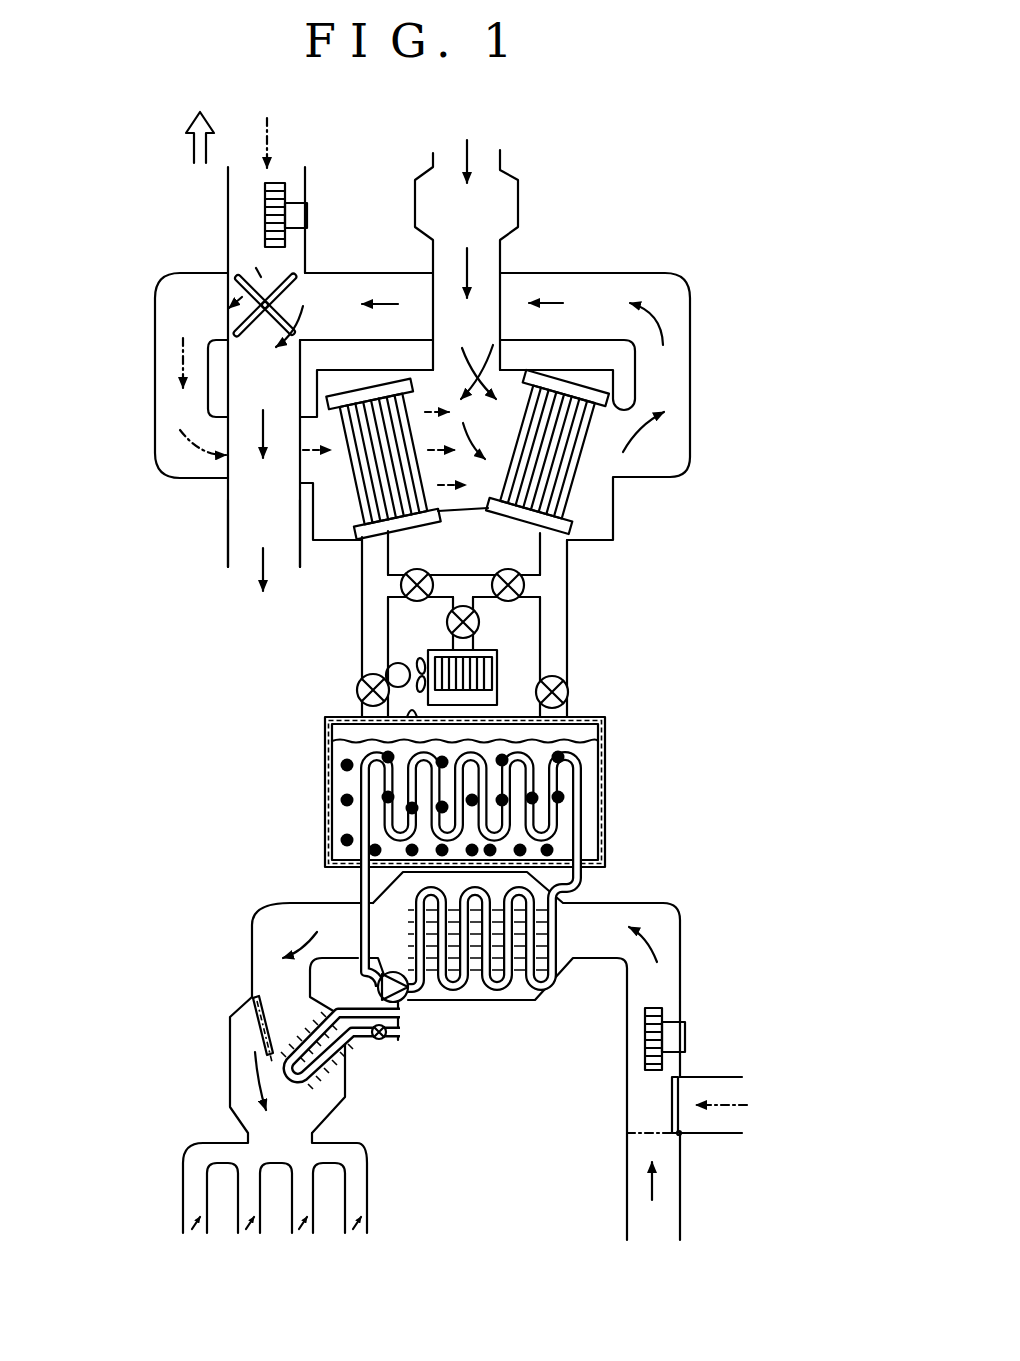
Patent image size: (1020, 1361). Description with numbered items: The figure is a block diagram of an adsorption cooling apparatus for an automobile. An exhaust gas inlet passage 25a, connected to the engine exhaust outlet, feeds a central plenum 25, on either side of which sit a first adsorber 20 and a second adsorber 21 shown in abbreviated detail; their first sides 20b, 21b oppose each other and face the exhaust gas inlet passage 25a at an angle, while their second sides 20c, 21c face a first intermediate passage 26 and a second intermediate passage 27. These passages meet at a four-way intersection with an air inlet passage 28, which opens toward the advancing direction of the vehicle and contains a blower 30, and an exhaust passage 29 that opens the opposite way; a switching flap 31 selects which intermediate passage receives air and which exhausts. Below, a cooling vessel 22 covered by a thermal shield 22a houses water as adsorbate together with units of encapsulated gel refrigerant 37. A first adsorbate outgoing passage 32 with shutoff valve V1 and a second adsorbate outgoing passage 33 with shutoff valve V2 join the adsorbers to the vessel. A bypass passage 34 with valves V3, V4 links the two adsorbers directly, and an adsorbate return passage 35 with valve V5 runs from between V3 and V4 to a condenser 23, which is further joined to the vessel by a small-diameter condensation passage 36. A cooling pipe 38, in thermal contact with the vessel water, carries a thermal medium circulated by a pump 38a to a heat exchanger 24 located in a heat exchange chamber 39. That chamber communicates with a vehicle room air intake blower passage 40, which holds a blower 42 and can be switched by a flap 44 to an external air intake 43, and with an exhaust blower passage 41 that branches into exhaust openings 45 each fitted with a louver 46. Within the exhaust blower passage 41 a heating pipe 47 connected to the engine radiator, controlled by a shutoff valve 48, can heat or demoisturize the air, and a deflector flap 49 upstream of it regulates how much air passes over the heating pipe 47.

The first adsorber 20 is at (352, 512).
The first side of the first adsorber 20b is at (360, 525).
The second side of the first adsorber 20c is at (349, 467).
The second adsorber 21 is at (546, 498).
The first side of the second adsorber 21b is at (507, 445).
The second side of the second adsorber 21c is at (575, 484).
The cooling vessel 22 is at (317, 851).
The thermal shield 22a is at (605, 797).
The condenser 23 is at (497, 660).
The heat exchanger 24 is at (488, 987).
The central plenum 25 is at (462, 400).
The exhaust gas inlet passage 25a is at (508, 211).
The first intermediate passage 26 is at (172, 360).
The second intermediate passage 27 is at (674, 392).
The air inlet passage 28 is at (248, 216).
The exhaust passage 29 is at (245, 493).
The blower 30 is at (286, 201).
The switching flap 31 is at (297, 283).
The first adsorbate outgoing passage 32 is at (363, 651).
The second adsorbate outgoing passage 33 is at (563, 673).
The bypass passage 34 is at (445, 592).
The adsorbate return passage 35 is at (497, 650).
The condensation passage 36 is at (413, 711).
The encapsulated gel refrigerant 37 is at (334, 800).
The cooling pipe 38 is at (605, 845).
The pump 38a is at (412, 1003).
The heat exchange chamber 39 is at (513, 997).
The vehicle room air intake blower passage 40 is at (667, 927).
The exhaust blower passage 41 is at (273, 932).
The blower 42 is at (686, 1012).
The external air intake 43 is at (718, 1115).
The flap 44 is at (677, 1090).
The exhaust openings 45 is at (197, 1192).
The louver 46 is at (365, 1216).
The heating pipe 47 is at (317, 1073).
The shutoff valve 48 is at (378, 1040).
The deflector flap 49 is at (268, 995).
The shutoff valve V1 is at (357, 693).
The shutoff valve V2 is at (568, 694).
The shutoff valve V3 is at (400, 585).
The shutoff valve V4 is at (524, 583).
The shutoff valve V5 is at (478, 618).